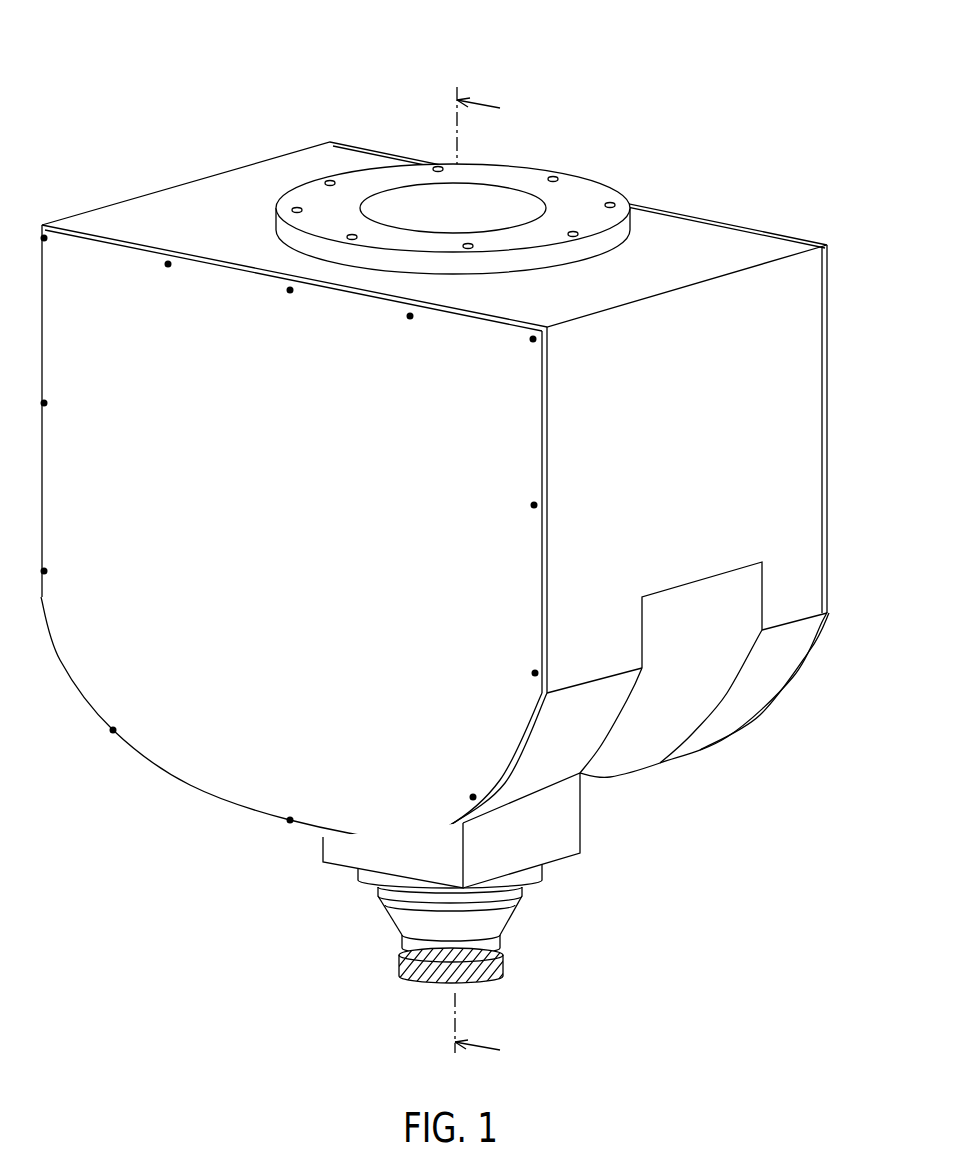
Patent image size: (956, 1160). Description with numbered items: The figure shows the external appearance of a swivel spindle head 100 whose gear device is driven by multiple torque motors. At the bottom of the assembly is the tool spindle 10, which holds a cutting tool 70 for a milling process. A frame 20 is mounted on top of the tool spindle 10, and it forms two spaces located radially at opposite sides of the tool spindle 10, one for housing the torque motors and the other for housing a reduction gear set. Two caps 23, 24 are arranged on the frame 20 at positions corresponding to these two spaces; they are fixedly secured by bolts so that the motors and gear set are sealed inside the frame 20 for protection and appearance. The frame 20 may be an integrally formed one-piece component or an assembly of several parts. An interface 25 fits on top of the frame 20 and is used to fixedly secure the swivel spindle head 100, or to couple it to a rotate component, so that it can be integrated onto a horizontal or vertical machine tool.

The swivel spindle head 100 is at (463, 29).
The frame 20 is at (242, 180).
The cap 23 is at (153, 756).
The cap 24 is at (740, 227).
The interface 25 is at (587, 187).
The tool spindle 10 is at (403, 919).
The cutting tool 70 is at (410, 980).